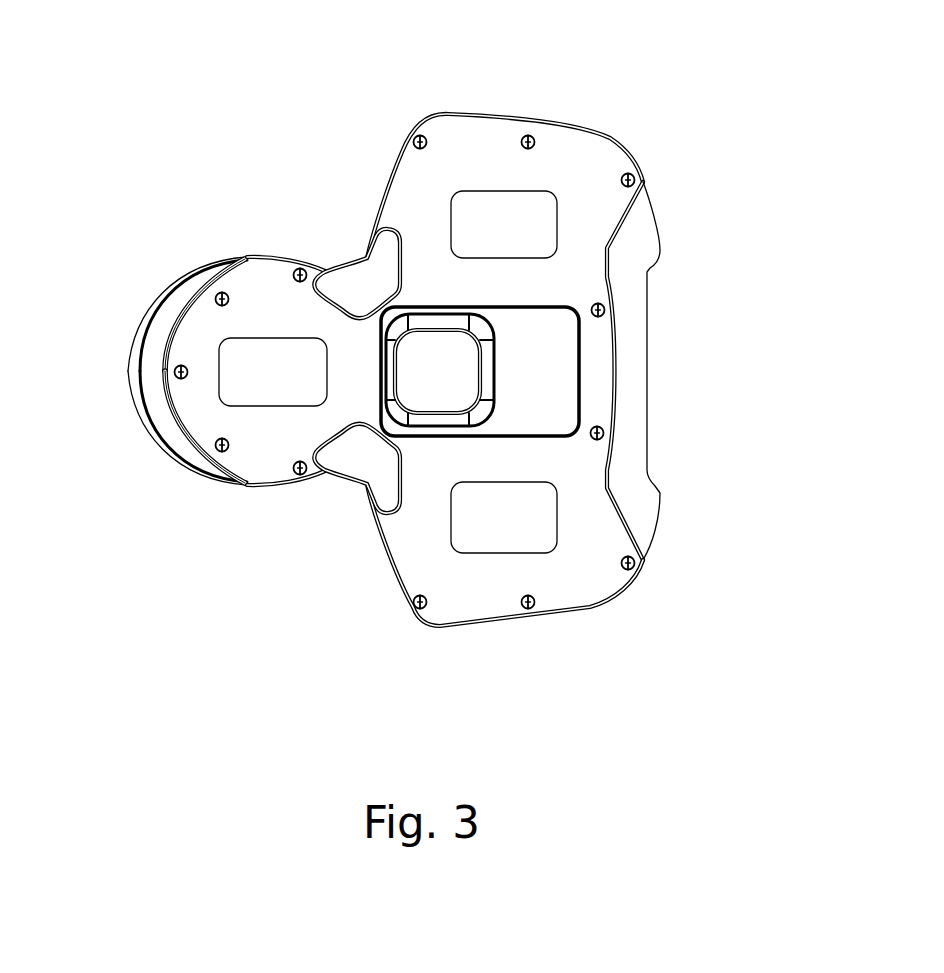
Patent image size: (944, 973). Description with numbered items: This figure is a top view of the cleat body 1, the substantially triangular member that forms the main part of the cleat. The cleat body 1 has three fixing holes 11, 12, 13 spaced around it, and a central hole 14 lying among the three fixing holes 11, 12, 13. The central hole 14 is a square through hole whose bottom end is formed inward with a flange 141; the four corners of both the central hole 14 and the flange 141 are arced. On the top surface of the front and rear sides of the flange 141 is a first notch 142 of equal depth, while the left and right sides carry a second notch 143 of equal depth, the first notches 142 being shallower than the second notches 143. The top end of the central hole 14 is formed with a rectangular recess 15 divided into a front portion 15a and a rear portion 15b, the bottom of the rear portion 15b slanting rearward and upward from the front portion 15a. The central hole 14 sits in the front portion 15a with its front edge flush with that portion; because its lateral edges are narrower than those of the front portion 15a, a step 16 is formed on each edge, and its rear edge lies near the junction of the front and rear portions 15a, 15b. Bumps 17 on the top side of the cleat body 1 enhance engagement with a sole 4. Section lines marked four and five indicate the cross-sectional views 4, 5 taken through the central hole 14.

The cleat body 1 is at (398, 345).
The fixing hole 11 is at (240, 373).
The fixing hole 12 is at (470, 533).
The fixing hole 13 is at (477, 200).
The central hole 14 is at (480, 343).
The flange 141 is at (445, 422).
The first notch 142 is at (388, 358).
The second notch 143 is at (433, 320).
The rectangular recess 15 is at (493, 227).
The front portion 15a is at (465, 312).
The rear portion 15b is at (553, 330).
The step 16 is at (448, 307).
The bump 17 is at (623, 172).
The sole 4 is at (358, 372).
The section line 5 is at (437, 302).